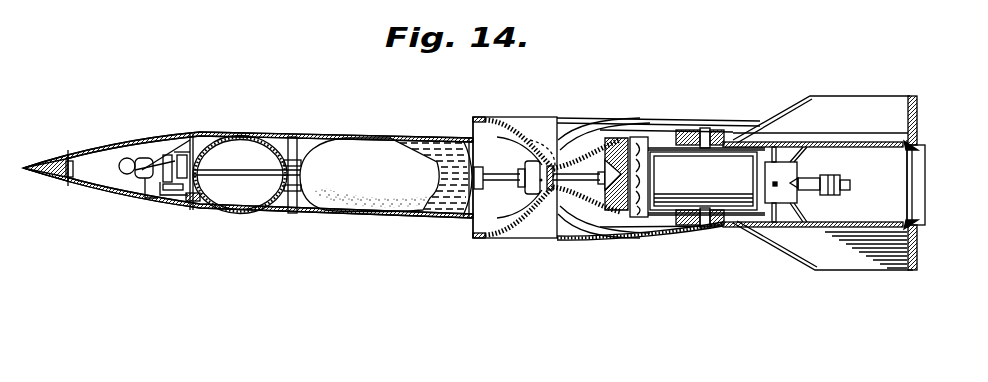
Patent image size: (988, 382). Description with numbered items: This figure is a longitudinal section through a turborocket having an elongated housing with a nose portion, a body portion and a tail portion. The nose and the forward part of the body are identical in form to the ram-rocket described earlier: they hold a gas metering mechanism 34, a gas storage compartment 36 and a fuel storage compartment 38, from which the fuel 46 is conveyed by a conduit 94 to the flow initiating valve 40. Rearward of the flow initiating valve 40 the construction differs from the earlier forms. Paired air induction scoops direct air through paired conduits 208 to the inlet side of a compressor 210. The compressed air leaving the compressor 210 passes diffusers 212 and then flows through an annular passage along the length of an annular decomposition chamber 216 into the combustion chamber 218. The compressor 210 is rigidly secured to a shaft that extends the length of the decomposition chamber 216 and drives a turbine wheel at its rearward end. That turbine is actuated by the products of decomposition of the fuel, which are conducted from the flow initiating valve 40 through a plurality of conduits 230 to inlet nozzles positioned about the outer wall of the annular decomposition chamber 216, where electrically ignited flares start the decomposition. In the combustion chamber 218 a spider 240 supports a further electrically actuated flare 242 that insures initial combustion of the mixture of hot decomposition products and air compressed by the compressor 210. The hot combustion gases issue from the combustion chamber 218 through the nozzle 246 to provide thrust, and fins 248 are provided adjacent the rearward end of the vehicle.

The gas metering mechanism 34 is at (147, 190).
The gas storage compartment 36 is at (238, 202).
The fuel storage compartment 38 is at (397, 135).
The fuel 46 is at (437, 205).
The paired conduits 208 is at (502, 130).
The conduit 94 is at (508, 185).
The flow initiating valve 40 is at (515, 185).
The compressor 210 is at (612, 157).
The conduits 230 is at (640, 127).
The diffusers 212 is at (647, 152).
The annular decomposition chamber 216 is at (715, 160).
The combustion chamber 218 is at (893, 210).
The spider 240 is at (783, 167).
The electrically actuated flare 242 is at (830, 178).
The nozzle 246 is at (917, 220).
The fins 248 is at (865, 265).